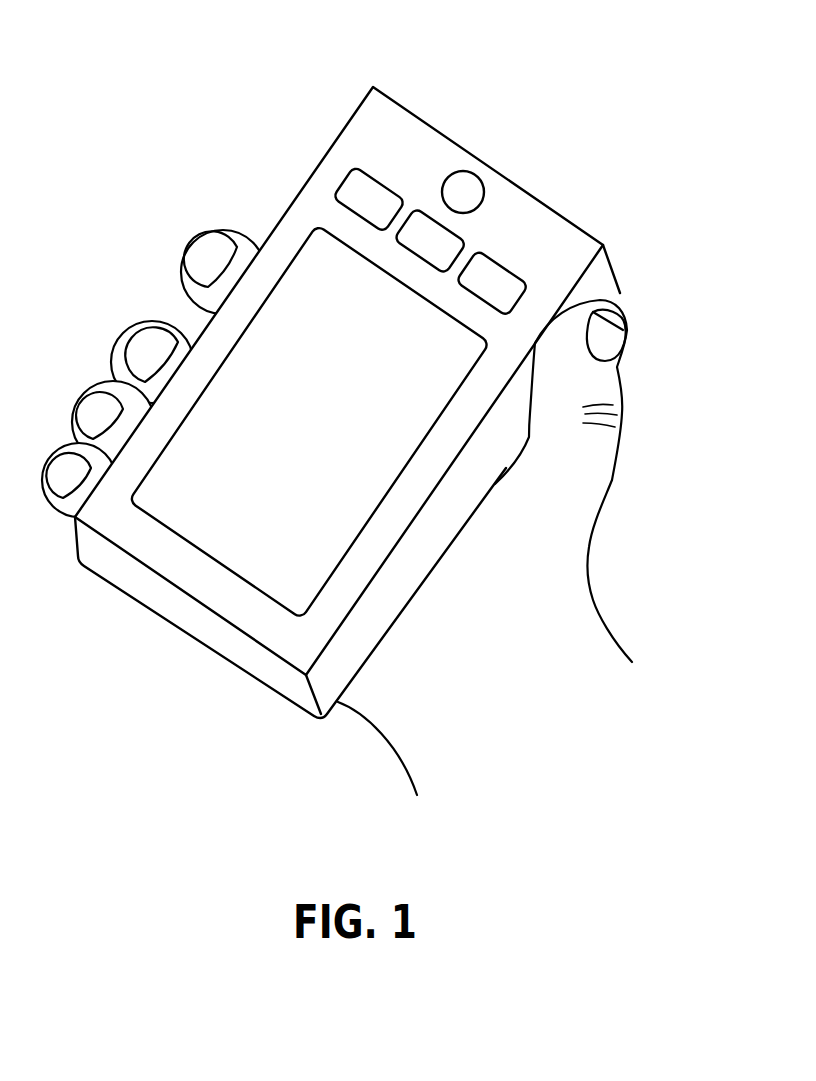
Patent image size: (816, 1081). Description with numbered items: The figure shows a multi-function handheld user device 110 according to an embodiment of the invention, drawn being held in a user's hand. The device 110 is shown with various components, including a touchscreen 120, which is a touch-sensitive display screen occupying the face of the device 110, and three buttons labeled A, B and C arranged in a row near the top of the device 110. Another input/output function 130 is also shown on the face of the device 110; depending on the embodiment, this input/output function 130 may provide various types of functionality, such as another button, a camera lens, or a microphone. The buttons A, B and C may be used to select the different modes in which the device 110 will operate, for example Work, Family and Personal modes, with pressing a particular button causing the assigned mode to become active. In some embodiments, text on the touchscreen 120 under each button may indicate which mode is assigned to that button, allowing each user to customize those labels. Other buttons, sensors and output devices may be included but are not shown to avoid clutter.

The device 110 is at (365, 137).
The touchscreen 120 is at (227, 488).
The input/output function 130 is at (483, 188).